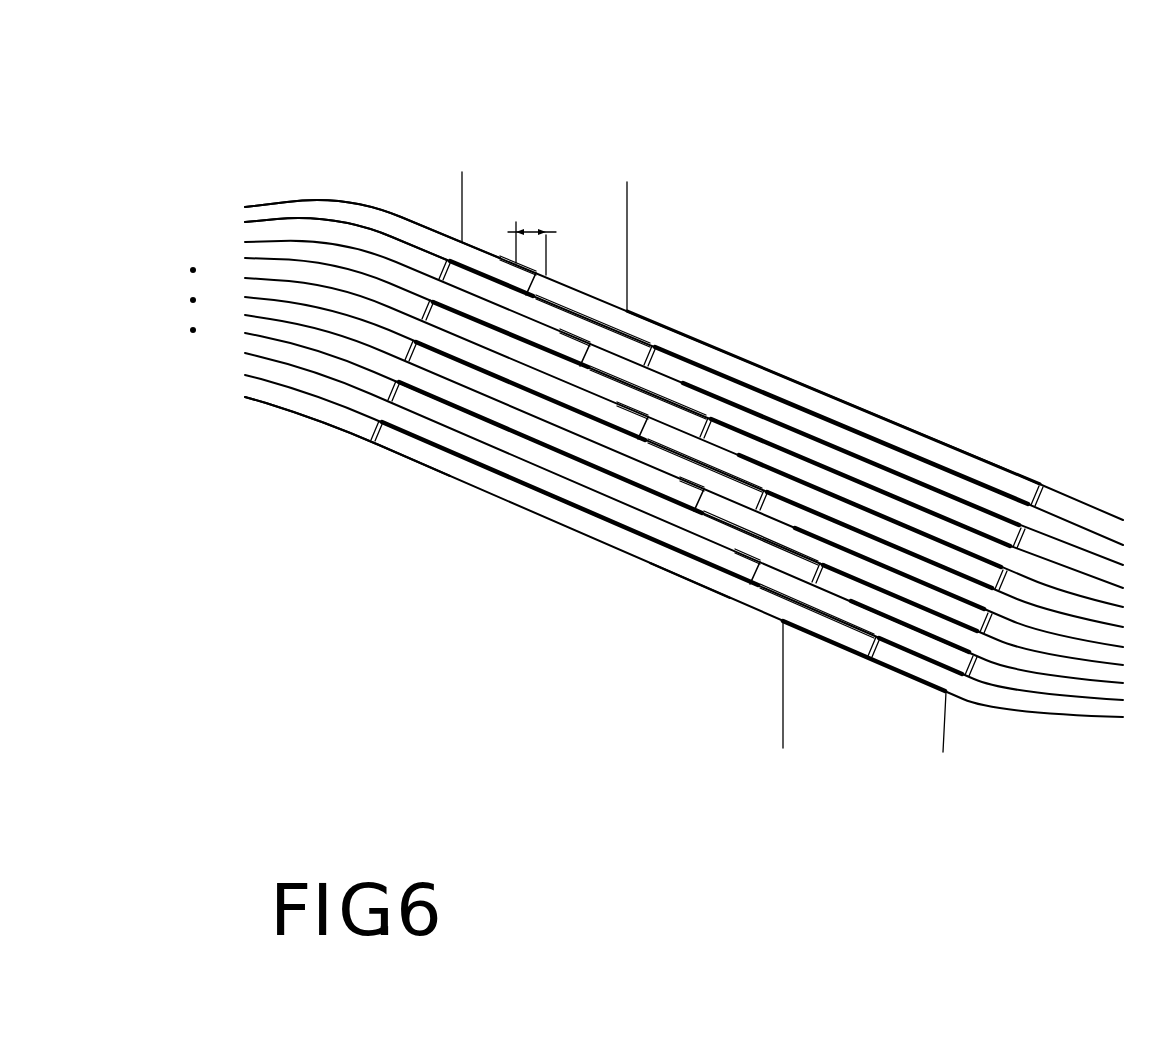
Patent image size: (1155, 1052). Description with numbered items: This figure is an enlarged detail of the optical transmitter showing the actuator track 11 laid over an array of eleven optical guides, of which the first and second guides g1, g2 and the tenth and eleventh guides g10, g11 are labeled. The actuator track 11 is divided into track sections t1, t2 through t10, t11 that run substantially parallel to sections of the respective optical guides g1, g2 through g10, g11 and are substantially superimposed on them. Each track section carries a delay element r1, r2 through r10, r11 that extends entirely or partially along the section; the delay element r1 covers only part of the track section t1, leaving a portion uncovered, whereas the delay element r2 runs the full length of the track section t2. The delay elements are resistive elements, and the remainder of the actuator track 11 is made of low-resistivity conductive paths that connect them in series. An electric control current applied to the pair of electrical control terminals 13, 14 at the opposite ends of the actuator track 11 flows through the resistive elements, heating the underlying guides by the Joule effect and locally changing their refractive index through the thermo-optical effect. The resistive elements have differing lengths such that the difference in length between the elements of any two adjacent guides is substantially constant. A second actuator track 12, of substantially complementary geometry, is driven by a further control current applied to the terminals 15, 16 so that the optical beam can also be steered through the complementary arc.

The optical guide g1 is at (246, 207).
The optical guide g2 is at (245, 222).
The optical guide g10 is at (245, 375).
The optical guide g11 is at (263, 404).
The delay element r1 is at (479, 252).
The delay element r2 is at (494, 255).
The delay element r10 is at (415, 437).
The delay element r11 is at (450, 477).
The track section t1 is at (452, 210).
The track section t2 is at (446, 246).
The track section t10 is at (578, 508).
The track section t11 is at (690, 581).
The actuator track 11 is at (380, 608).
The second actuator track 12 is at (946, 280).
The electrical control terminal 13 is at (462, 172).
The electrical control terminal 14 is at (783, 746).
The terminal 15 is at (630, 188).
The terminal 16 is at (945, 752).